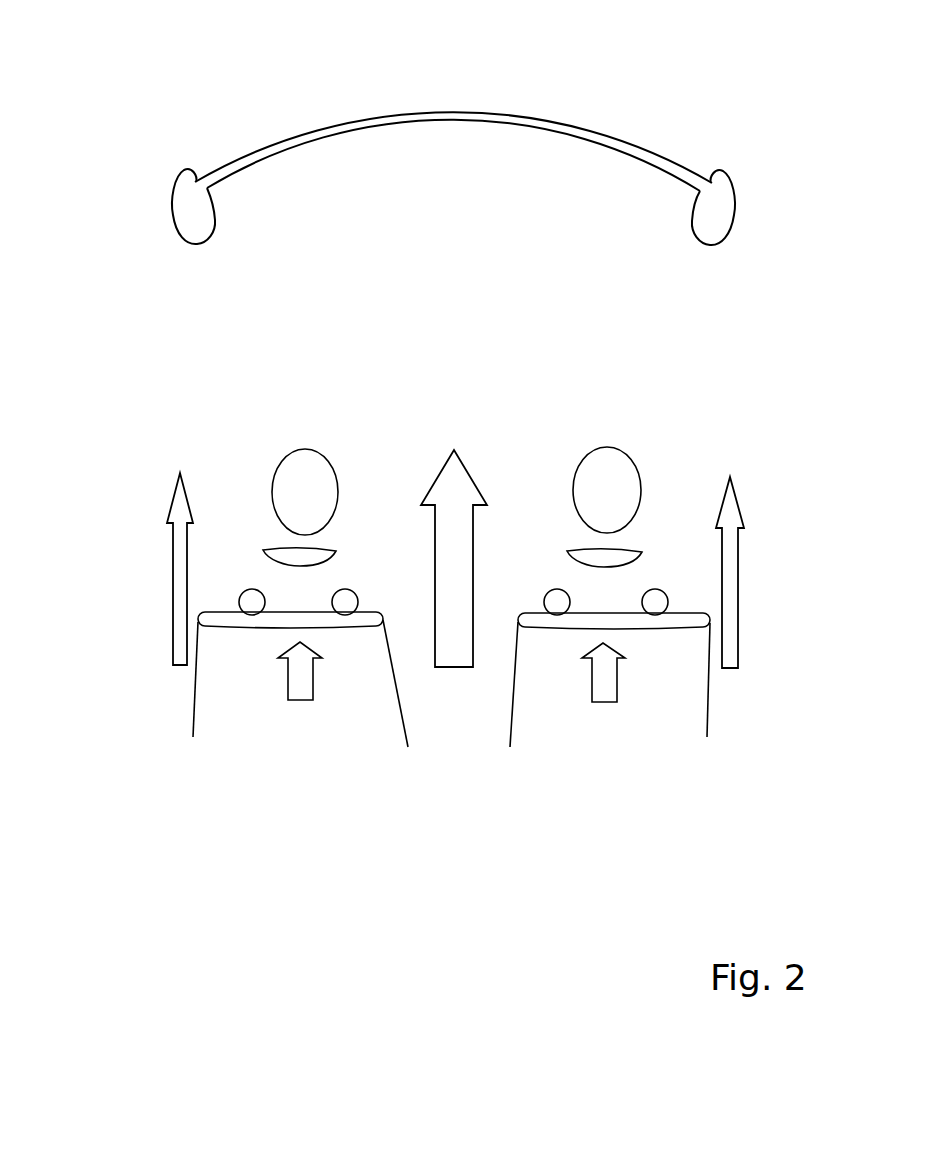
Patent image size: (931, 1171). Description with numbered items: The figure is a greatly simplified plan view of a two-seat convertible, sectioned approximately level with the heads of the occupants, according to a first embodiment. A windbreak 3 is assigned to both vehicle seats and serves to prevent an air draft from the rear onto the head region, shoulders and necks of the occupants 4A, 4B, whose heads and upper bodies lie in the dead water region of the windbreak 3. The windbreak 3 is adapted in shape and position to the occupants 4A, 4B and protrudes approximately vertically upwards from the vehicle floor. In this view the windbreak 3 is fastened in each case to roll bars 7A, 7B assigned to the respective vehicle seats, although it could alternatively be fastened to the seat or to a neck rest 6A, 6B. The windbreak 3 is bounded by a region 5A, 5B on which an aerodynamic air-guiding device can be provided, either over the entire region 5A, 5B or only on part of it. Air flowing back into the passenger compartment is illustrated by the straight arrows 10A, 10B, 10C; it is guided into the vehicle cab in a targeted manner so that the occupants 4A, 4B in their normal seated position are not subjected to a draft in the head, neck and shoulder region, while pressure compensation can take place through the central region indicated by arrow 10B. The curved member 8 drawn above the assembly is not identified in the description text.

The curved band 8 is at (557, 123).
The windbreak 3 is at (360, 623).
The occupant 4A is at (295, 493).
The occupant 4B is at (593, 495).
The region bounding the windbreak 5A is at (304, 699).
The region bounding the windbreak 5B is at (604, 702).
The neck rest 6A is at (280, 553).
The neck rest 6B is at (620, 557).
The roll bar 7A is at (252, 605).
The roll bar 7B is at (553, 608).
The straight arrow 10A is at (180, 612).
The straight arrow 10B is at (448, 493).
The straight arrow 10C is at (728, 637).